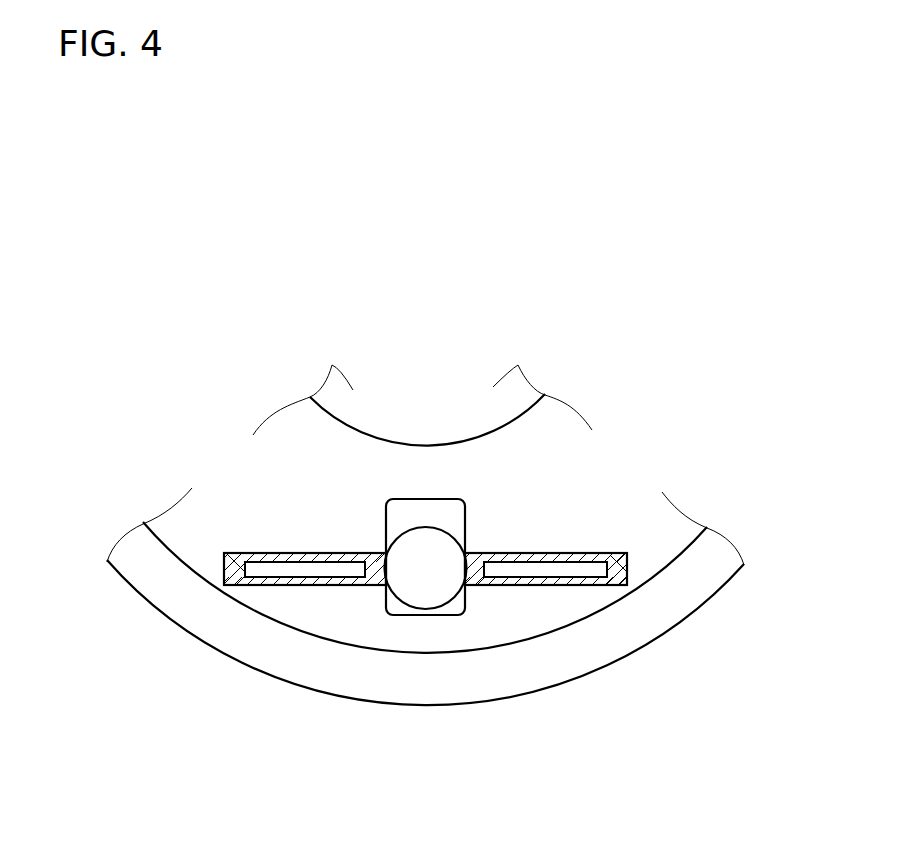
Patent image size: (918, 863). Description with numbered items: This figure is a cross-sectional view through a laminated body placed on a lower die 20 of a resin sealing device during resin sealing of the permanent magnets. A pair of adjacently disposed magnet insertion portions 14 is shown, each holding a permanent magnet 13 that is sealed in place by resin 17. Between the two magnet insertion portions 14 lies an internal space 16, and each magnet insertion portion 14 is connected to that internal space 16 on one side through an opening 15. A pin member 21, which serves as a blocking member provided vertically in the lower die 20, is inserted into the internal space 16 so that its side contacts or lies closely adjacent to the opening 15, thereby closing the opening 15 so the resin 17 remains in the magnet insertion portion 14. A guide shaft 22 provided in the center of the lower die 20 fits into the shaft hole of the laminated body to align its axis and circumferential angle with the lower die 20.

The permanent magnet 13 is at (300, 568).
The magnet insertion portion 14 is at (225, 573).
The opening 15 is at (385, 577).
The internal space 16 is at (421, 513).
The resin 17 is at (238, 555).
The lower die 20 is at (700, 578).
The pin member 21 is at (425, 588).
The guide shaft 22 is at (518, 396).